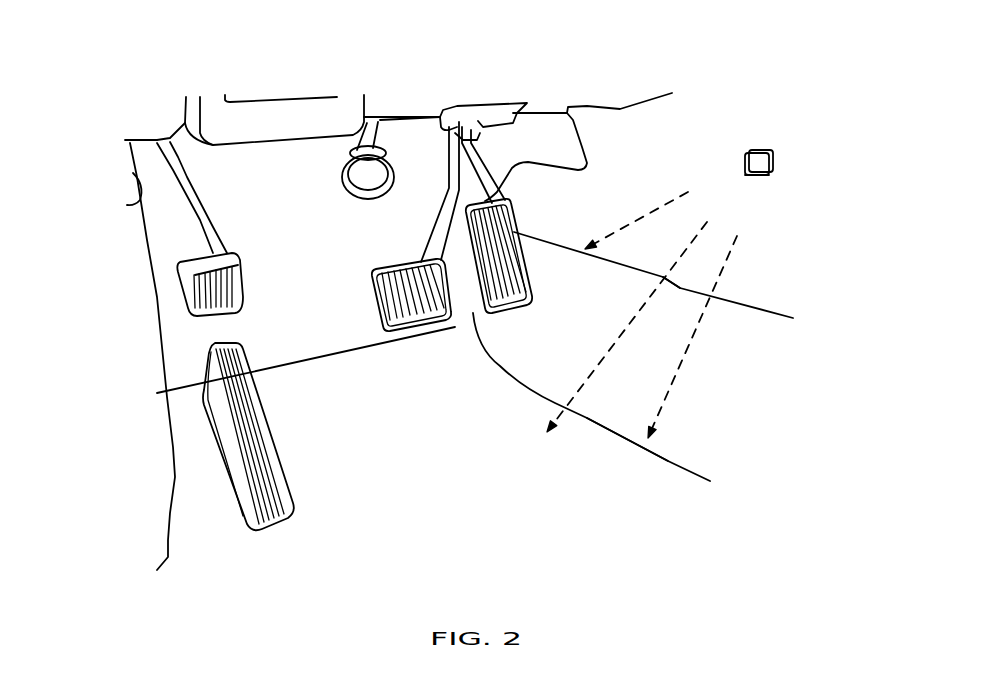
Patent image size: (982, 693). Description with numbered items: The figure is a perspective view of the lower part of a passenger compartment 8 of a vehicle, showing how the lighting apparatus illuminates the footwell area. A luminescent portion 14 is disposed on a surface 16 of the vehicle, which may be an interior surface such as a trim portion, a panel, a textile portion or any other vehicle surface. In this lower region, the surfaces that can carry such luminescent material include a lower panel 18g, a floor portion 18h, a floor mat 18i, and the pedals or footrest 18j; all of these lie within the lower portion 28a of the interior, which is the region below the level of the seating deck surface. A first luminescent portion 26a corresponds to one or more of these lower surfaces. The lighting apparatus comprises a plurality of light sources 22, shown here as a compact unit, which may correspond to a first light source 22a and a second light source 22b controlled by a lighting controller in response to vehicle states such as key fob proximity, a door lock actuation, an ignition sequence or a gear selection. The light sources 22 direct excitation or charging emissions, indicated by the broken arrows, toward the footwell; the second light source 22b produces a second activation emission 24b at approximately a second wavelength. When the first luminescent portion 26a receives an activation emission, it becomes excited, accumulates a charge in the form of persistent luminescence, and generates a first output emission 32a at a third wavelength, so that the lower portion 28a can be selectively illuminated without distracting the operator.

The passenger compartment 8 is at (450, 40).
The first output emission 32a is at (405, 138).
The lower portion 28a is at (620, 78).
The first luminescent portion 26a is at (176, 336).
The pedal or footrest 18j is at (187, 259).
The luminescent portion 14 is at (233, 457).
The surface 16 is at (537, 519).
The floor portion 18h is at (753, 327).
The lower panel 18g is at (703, 257).
The floor mat 18i is at (630, 500).
The light sources 22 is at (771, 153).
The first light source 22a is at (762, 173).
The second light source 22b is at (760, 150).
The second activation emission 24b is at (735, 237).